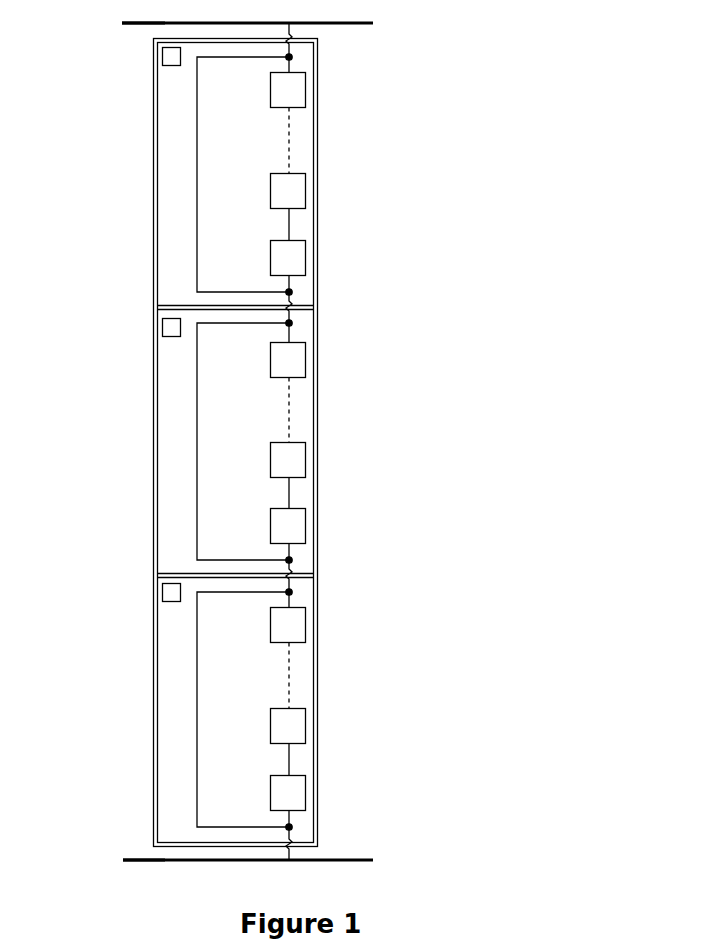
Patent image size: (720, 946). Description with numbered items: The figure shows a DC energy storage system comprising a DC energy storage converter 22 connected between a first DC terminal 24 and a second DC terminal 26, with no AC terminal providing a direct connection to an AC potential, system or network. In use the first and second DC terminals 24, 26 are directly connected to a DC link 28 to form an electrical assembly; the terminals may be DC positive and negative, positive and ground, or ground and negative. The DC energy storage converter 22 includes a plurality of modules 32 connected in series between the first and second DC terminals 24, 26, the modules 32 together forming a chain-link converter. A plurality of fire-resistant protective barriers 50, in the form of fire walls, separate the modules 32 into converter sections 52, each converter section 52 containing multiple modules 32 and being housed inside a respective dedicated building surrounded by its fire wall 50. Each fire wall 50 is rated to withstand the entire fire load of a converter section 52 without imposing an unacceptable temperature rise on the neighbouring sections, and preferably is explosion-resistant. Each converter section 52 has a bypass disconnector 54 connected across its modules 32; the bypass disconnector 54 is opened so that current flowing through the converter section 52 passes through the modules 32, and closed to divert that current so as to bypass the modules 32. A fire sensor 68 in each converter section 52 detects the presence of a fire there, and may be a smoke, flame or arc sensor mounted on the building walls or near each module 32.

The DC energy storage converter 22 is at (462, 430).
The first DC terminal 24 is at (293, 24).
The second DC terminal 26 is at (293, 857).
The DC link 28 is at (133, 33).
The module 32 is at (298, 97).
The fire-resistant protective barrier 50 is at (153, 228).
The converter section 52 is at (306, 287).
The bypass disconnector 54 is at (197, 148).
The fire sensor 68 is at (164, 64).